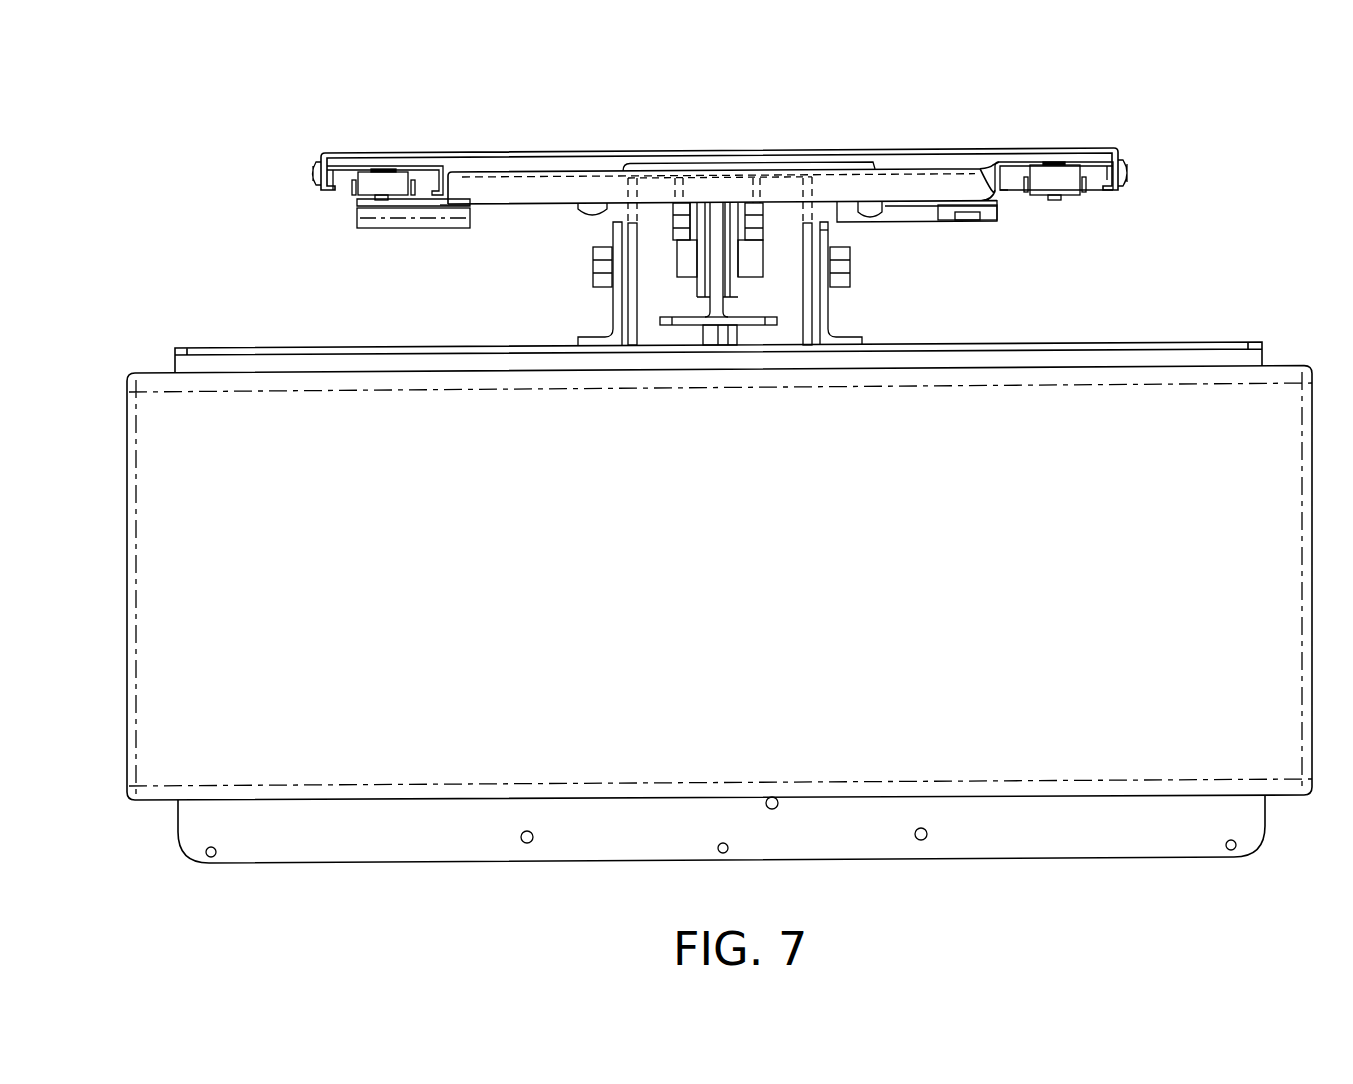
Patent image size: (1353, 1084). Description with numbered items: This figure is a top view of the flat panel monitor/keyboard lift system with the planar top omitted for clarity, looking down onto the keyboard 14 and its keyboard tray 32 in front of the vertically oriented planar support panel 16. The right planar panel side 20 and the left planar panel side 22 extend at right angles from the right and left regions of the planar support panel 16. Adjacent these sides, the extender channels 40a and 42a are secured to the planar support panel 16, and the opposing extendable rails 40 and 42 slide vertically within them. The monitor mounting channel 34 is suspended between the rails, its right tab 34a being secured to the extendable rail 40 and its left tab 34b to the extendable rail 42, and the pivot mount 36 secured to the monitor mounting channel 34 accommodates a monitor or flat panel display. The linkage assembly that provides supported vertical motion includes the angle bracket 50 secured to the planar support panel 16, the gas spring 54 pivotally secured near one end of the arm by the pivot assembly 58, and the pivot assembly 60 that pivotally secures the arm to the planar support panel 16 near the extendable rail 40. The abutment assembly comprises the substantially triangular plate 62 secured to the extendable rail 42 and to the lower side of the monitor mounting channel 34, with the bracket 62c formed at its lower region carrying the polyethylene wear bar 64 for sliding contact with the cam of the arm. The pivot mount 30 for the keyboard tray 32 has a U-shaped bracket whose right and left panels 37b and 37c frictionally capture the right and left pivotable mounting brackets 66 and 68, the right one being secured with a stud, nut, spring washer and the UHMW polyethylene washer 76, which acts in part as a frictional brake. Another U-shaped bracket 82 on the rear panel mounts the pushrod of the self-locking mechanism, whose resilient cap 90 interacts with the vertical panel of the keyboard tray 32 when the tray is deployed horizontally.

The keyboard 14 is at (745, 597).
The planar support panel 16 is at (556, 150).
The right planar panel side 20 is at (1122, 180).
The left planar panel side 22 is at (320, 187).
The pivot mount 30 is at (846, 293).
The keyboard tray 32 is at (1140, 336).
The monitor mounting channel 34 is at (645, 190).
The right tab 34a is at (1033, 197).
The left tab 34b is at (433, 197).
The pivot mount 36 is at (752, 250).
The right panel 37b is at (808, 332).
The left panel 37c is at (633, 340).
The extendable rail 40 is at (1088, 186).
The extender channel 40a is at (1077, 163).
The extendable rail 42 is at (353, 182).
The extender channel 42a is at (410, 165).
The angle bracket 50 is at (915, 218).
The gas spring 54 is at (772, 206).
The pivot assembly 58 is at (587, 215).
The pivot assembly 60 is at (970, 216).
The triangular plate 62 is at (527, 207).
The bracket 62c is at (457, 228).
The wear bar 64 is at (387, 232).
The right pivotable mounting bracket 66 is at (860, 338).
The left pivotable mounting bracket 68 is at (583, 340).
The UHMW polyethylene washer 76 is at (817, 332).
The U-shaped bracket 82 is at (660, 270).
The resilient cap 90 is at (720, 337).